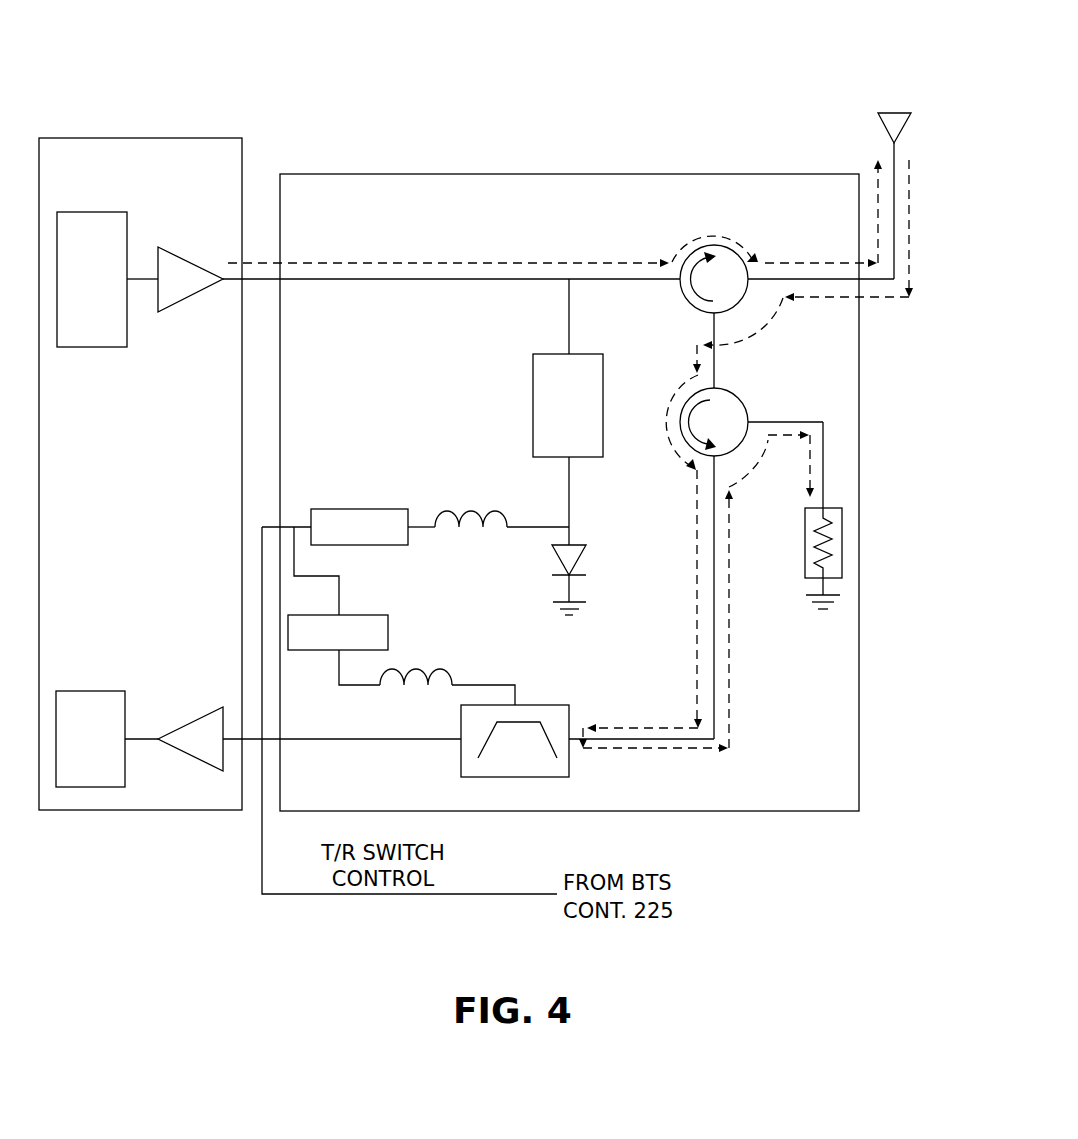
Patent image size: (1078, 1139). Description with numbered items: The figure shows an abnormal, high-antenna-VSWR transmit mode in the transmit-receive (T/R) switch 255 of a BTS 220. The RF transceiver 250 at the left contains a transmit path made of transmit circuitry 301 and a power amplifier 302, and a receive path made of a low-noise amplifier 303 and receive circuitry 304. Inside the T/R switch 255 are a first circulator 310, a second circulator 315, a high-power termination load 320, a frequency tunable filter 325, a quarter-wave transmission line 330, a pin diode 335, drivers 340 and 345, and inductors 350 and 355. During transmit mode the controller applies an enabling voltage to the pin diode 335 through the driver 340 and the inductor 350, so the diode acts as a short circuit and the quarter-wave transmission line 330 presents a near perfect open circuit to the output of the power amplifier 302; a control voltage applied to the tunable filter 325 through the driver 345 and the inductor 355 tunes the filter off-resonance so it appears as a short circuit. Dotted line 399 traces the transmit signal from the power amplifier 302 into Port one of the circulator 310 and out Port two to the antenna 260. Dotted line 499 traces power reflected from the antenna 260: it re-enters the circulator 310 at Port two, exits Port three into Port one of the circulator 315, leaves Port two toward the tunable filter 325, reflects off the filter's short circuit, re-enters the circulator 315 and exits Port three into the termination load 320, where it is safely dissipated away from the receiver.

The BTS 220 is at (669, 66).
The RF transceiver 250 is at (140, 138).
The transmit-receive (T/R) switch 255 is at (570, 174).
The antenna 260 is at (893, 113).
The transmit (XMIT) circuitry 301 is at (92, 347).
The power amplifier (PA) 302 is at (201, 268).
The low-noise amplifier (LNA) 303 is at (190, 723).
The receive (RCV) circuitry 304 is at (90, 691).
The circulator 310 is at (714, 245).
The circulator 315 is at (740, 395).
The high-power termination load 320 is at (805, 542).
The frequency tunable filter 325 is at (545, 705).
The quarter-wave transmission line 330 is at (533, 405).
The pin diode 335 is at (586, 562).
The driver 340 is at (360, 509).
The driver 345 is at (368, 615).
The inductor 350 is at (470, 510).
The inductor 355 is at (440, 668).
The dotted line 399 is at (513, 262).
The dotted line 499 is at (884, 300).